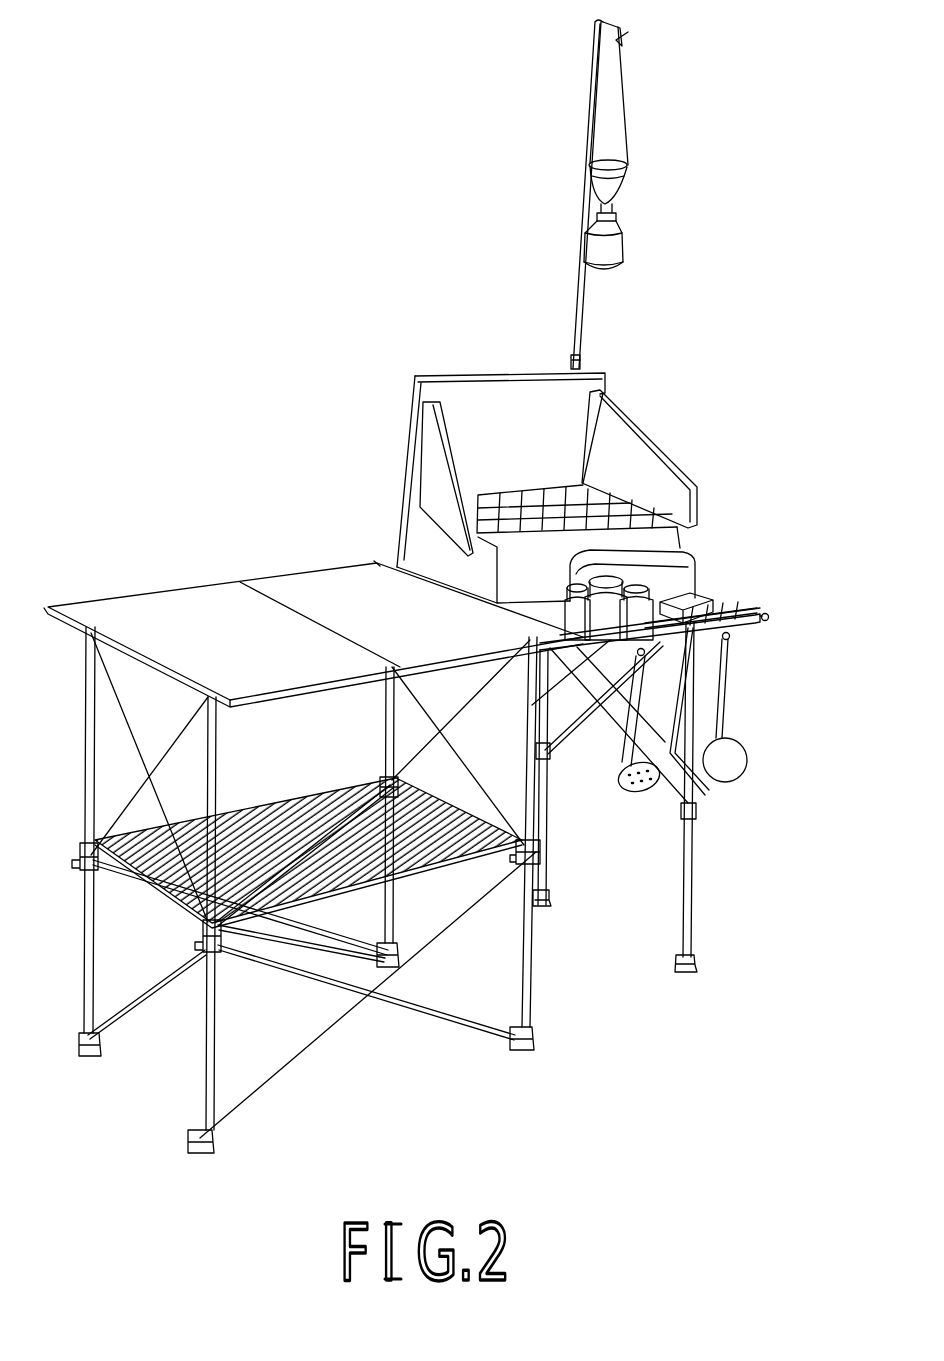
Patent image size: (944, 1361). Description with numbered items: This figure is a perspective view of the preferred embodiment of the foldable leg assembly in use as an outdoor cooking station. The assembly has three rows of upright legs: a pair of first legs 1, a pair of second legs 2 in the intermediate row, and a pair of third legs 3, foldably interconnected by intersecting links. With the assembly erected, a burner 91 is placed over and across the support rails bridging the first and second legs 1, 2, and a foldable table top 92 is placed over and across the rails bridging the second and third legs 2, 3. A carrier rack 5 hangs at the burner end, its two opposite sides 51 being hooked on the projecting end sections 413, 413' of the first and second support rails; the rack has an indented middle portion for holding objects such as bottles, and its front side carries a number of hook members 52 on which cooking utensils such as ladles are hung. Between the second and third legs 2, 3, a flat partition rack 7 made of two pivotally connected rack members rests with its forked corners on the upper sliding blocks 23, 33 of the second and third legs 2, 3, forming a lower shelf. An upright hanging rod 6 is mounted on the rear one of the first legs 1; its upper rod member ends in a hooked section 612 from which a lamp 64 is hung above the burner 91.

The first legs 1 is at (538, 882).
The second legs 2 is at (400, 697).
The third legs 3 is at (90, 765).
The carrier rack 5 is at (702, 600).
The hanging rod 6 is at (577, 330).
The flat partition rack 7 is at (309, 788).
The upper sliding block 23 is at (545, 848).
The upper sliding block 33 is at (193, 932).
The opposite sides 51 is at (742, 616).
The hook members 52 is at (735, 645).
The lamp 64 is at (610, 258).
The burner 91 is at (618, 493).
The foldable table top 92 is at (368, 607).
The projecting end section 413 is at (803, 626).
The projecting end section 413' is at (710, 722).
The hooked section 612 is at (624, 44).